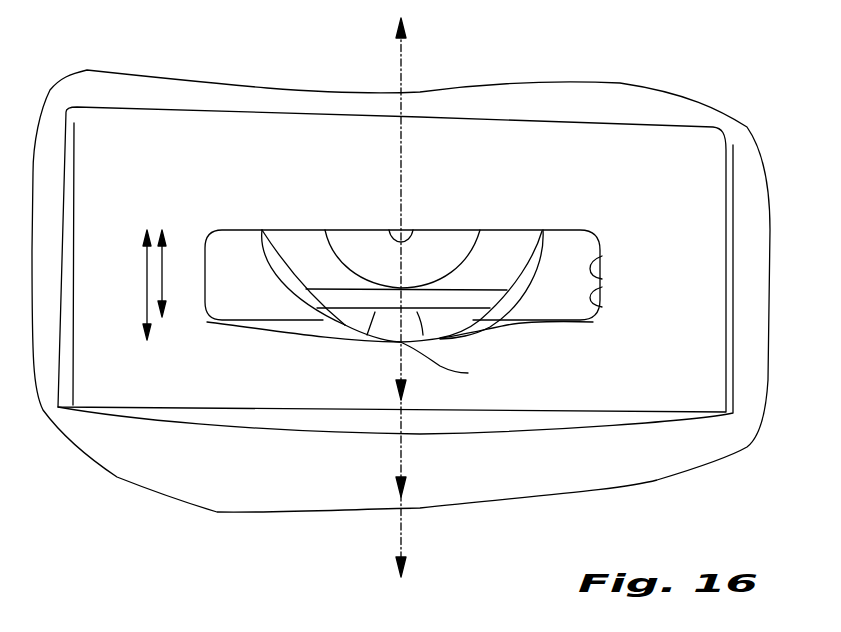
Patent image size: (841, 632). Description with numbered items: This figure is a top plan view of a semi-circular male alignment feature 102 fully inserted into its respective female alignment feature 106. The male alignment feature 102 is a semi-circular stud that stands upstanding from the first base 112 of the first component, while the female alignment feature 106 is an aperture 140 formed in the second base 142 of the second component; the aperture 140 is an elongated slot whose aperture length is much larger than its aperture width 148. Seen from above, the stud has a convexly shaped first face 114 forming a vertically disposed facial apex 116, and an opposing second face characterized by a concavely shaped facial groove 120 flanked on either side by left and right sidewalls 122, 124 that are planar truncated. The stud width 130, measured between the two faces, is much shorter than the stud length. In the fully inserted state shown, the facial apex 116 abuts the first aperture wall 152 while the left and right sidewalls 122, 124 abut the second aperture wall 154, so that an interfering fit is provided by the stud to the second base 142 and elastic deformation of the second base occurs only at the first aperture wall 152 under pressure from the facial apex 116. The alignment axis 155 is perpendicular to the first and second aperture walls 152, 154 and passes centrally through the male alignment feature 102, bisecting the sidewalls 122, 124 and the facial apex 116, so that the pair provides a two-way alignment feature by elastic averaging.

The semi-circular male alignment feature 102 is at (278, 266).
The female alignment feature 106 is at (602, 278).
The first base 112 is at (438, 247).
The first face 114 is at (470, 327).
The facial apex 116 is at (424, 359).
The facial groove 120 is at (387, 285).
The left sidewall 122 is at (531, 229).
The right sidewall 124 is at (280, 229).
The stud width 130 is at (146, 316).
The aperture 140 is at (602, 305).
The second base 142 is at (458, 138).
The aperture width 148 is at (164, 280).
The first aperture wall 152 is at (290, 336).
The second aperture wall 154 is at (409, 229).
The alignment axis 155 is at (400, 139).